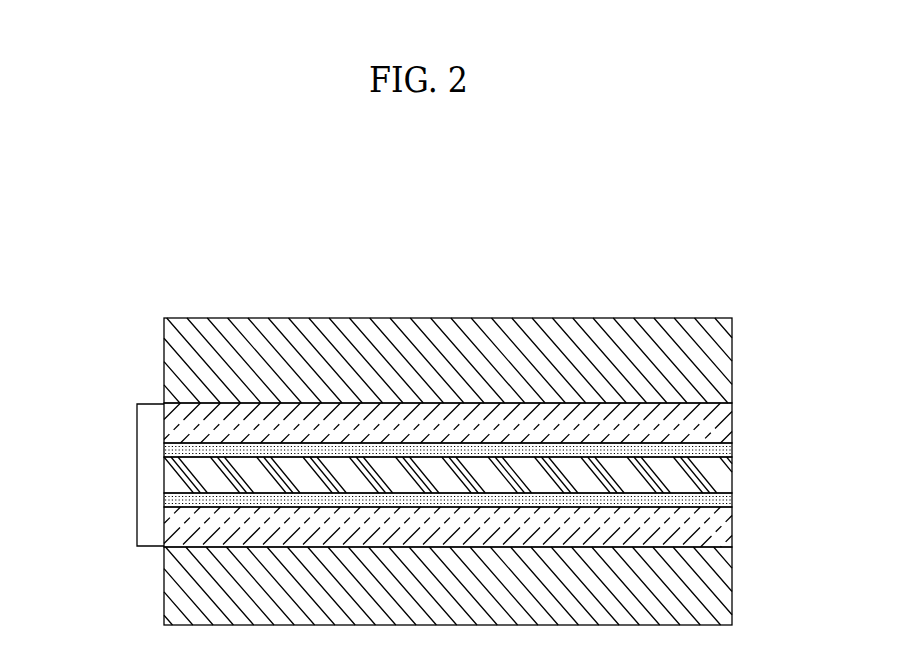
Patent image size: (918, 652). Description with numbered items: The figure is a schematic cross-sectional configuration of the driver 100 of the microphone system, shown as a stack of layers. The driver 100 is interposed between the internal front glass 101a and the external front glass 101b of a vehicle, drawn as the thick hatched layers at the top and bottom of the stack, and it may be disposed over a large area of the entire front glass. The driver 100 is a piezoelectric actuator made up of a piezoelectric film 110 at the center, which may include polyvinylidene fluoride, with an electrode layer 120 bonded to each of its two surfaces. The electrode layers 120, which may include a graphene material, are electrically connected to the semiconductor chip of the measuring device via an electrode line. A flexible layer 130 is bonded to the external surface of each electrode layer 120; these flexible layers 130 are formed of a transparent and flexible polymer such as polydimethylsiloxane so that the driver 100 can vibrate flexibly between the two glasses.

The driver 100 is at (412, 475).
The internal front glass 101a is at (712, 361).
The external front glass 101b is at (712, 579).
The piezoelectric film 110 is at (720, 472).
The electrode layer 120 is at (730, 445).
The flexible layer 130 is at (717, 418).